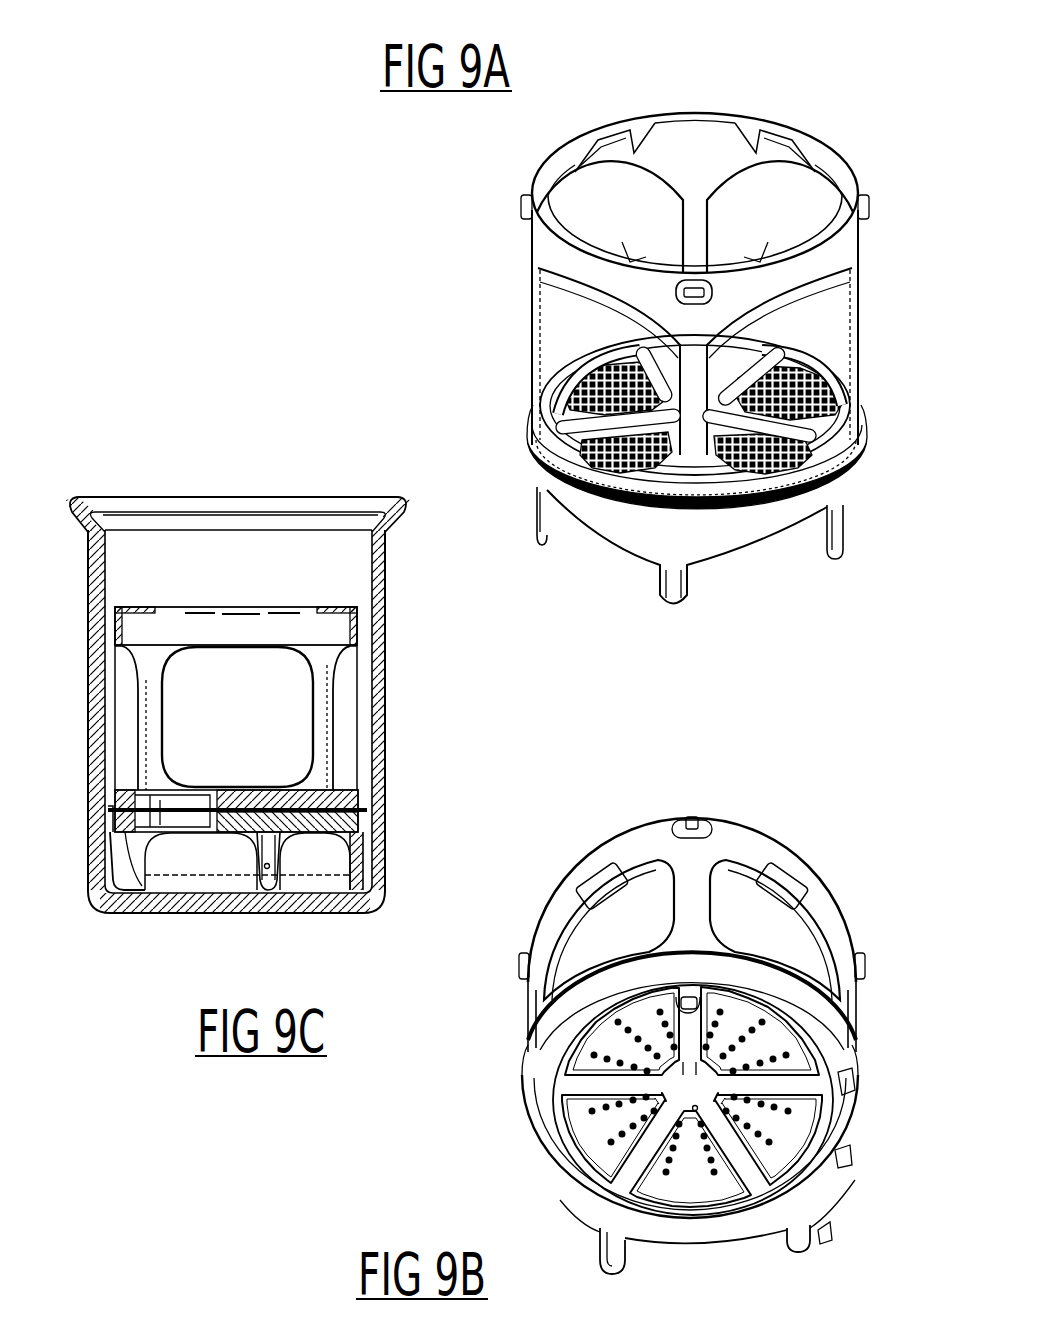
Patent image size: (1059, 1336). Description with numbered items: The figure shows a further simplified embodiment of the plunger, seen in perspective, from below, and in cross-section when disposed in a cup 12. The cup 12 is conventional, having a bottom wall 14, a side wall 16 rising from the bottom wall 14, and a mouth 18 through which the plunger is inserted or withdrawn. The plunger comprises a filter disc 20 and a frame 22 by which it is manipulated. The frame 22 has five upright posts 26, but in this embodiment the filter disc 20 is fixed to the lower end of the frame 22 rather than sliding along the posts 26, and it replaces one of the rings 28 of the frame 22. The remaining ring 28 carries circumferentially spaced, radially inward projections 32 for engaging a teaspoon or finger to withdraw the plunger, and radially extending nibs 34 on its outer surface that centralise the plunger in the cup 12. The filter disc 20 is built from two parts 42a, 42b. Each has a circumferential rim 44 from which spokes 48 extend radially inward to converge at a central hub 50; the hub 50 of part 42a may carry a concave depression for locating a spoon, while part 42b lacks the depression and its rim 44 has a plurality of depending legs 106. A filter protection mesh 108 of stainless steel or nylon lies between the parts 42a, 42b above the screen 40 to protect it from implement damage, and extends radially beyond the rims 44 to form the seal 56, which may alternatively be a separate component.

In FIG. 9C, the cup 12 is at (267, 718).
In FIG. 9C, the bottom wall 14 is at (235, 940).
In FIG. 9C, the side wall 16 is at (284, 710).
In FIG. 9C, the mouth 18 is at (238, 481).
In FIG. 9C, the filter disc 20 is at (301, 816).
In FIG. 9A, the frame 22 is at (642, 294).
In FIG. 9C, the frame 22 is at (281, 711).
In FIG. 9A, the upright posts 26 is at (652, 405).
In FIG. 9C, the upright posts 26 is at (248, 772).
In FIG. 9B, the upright posts 26 is at (692, 879).
In FIG. 9A, the ring 28 is at (695, 161).
In FIG. 9C, the ring 28 is at (287, 612).
In FIG. 9B, the ring 28 is at (692, 923).
In FIG. 9A, the projections 32 is at (695, 131).
In FIG. 9B, the projections 32 is at (692, 899).
In FIG. 9A, the nibs 34 is at (729, 183).
In FIG. 9B, the nibs 34 is at (708, 858).
In FIG. 9A, the screen 40 is at (666, 457).
In FIG. 9A, the part 42a is at (634, 333).
In FIG. 9C, the part 42a is at (286, 718).
In FIG. 9A, the part 42b is at (690, 554).
In FIG. 9C, the part 42b is at (281, 860).
In FIG. 9B, the part 42b is at (658, 1129).
In FIG. 9A, the circumferential rim 44 is at (722, 467).
In FIG. 9B, the circumferential rim 44 is at (655, 1001).
In FIG. 9A, the spokes 48 is at (686, 483).
In FIG. 9B, the spokes 48 is at (573, 1102).
In FIG. 9B, the central hub 50 is at (692, 1149).
In FIG. 9A, the seal 56 is at (739, 444).
In FIG. 9C, the seal 56 is at (128, 894).
In FIG. 9C, the depending legs 106 is at (247, 910).
In FIG. 9B, the depending legs 106 is at (864, 1156).
In FIG. 9A, the filter protection mesh 108 is at (647, 387).
In FIG. 9B, the filter protection mesh 108 is at (690, 1166).